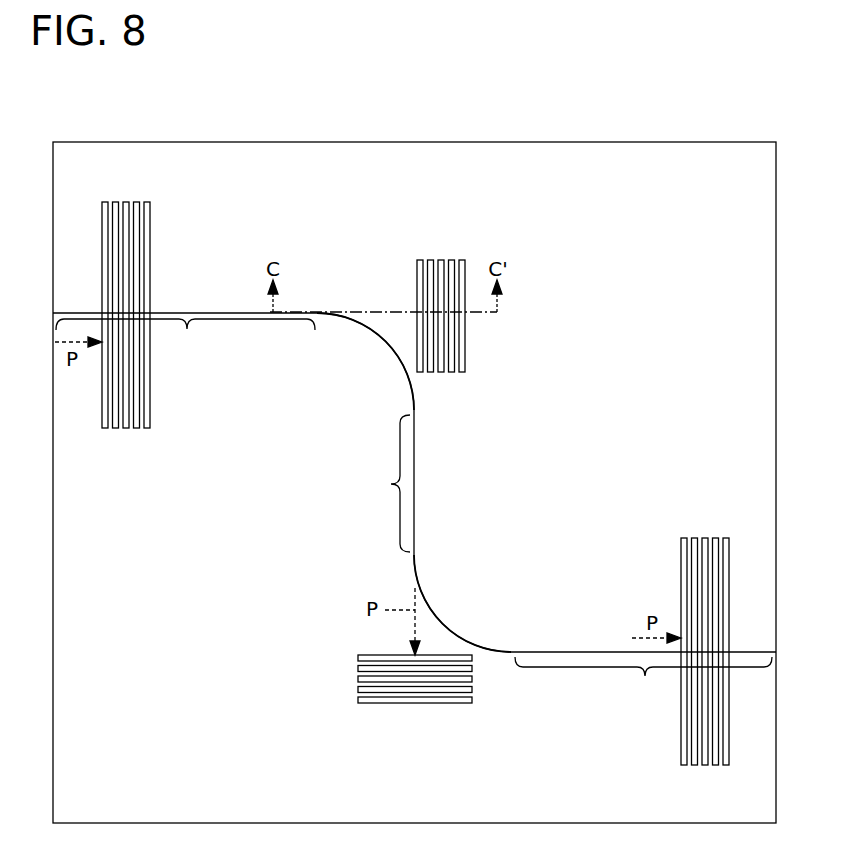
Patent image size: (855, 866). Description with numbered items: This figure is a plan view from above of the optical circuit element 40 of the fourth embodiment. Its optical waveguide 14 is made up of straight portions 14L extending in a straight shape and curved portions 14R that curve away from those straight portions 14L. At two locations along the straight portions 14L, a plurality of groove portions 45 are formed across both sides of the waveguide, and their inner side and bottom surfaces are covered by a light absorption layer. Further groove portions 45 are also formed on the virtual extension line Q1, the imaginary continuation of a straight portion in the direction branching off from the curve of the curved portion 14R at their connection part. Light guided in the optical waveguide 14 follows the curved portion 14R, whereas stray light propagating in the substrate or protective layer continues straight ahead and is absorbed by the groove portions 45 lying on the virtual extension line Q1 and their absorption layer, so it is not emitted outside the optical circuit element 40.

The optical circuit element 40 is at (545, 142).
The optical waveguide 14 is at (80, 313).
The straight portions 14L is at (414, 512).
The curved portions 14R is at (389, 352).
The groove portions 45 is at (139, 202).
The virtual extension line Q1 is at (388, 310).